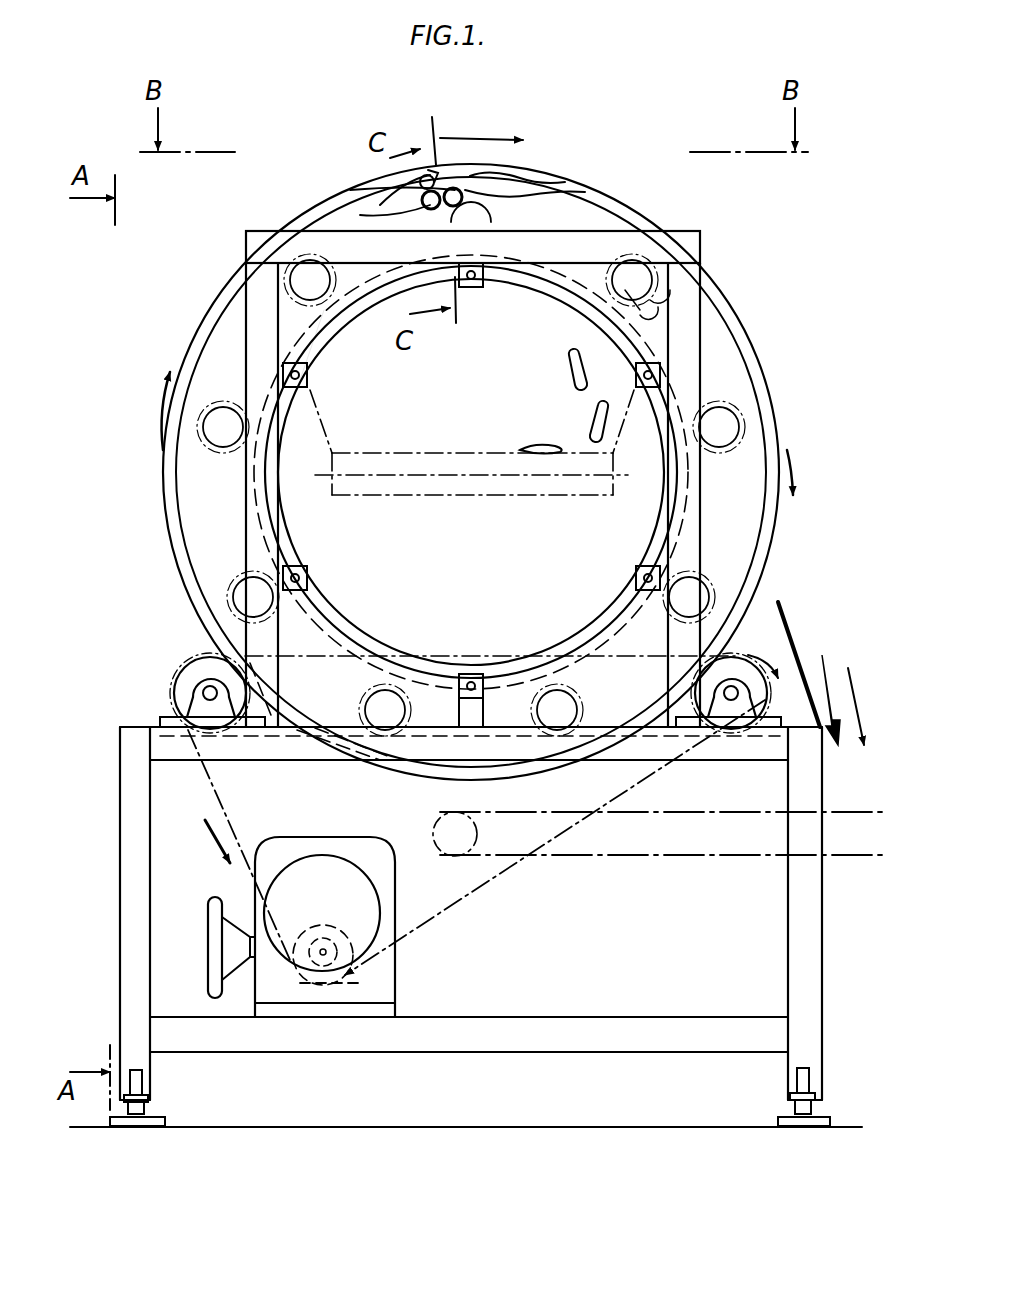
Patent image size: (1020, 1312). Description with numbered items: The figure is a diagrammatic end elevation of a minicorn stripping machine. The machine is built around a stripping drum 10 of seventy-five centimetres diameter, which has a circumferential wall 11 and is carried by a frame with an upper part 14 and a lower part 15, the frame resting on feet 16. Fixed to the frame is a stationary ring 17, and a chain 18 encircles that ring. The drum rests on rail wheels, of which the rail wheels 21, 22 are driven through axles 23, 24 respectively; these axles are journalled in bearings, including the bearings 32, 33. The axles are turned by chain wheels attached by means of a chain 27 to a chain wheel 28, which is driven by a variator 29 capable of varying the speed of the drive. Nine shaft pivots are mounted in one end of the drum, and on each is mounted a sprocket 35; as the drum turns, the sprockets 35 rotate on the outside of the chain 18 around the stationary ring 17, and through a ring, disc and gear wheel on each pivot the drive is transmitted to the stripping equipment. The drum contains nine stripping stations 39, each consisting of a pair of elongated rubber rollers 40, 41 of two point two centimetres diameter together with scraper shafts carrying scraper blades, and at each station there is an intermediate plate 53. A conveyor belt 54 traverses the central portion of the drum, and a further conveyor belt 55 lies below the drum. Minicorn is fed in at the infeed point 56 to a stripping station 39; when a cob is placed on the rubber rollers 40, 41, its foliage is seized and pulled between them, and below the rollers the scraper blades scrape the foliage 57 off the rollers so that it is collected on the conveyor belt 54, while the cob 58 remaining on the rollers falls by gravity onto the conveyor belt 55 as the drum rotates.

The stripping drum 10 is at (772, 357).
The circumferential wall 11 is at (718, 297).
The upper part of frame 14 is at (252, 310).
The lower part of frame 15 is at (130, 885).
The feet 16 is at (158, 1117).
The stationary ring 17 is at (637, 348).
The chain 18 is at (683, 298).
The rail wheel 21 is at (182, 663).
The rail wheel 22 is at (757, 642).
The axle 23 is at (195, 676).
The axle 24 is at (768, 668).
The chain 27 is at (485, 922).
The chain wheel 28 is at (360, 983).
The variator 29 is at (345, 912).
The bearing 32 is at (185, 710).
The bearing 33 is at (782, 692).
The sprocket 35 is at (633, 273).
The stripping station 39 is at (418, 176).
The rubber roller 40 is at (428, 205).
The rubber roller 41 is at (548, 182).
The intermediate plate 53 is at (500, 178).
The conveyor belt 54 is at (345, 530).
The conveyor belt 55 is at (663, 842).
The infeed point 56 is at (268, 226).
The foliage 57 is at (590, 427).
The cob 58 is at (840, 742).